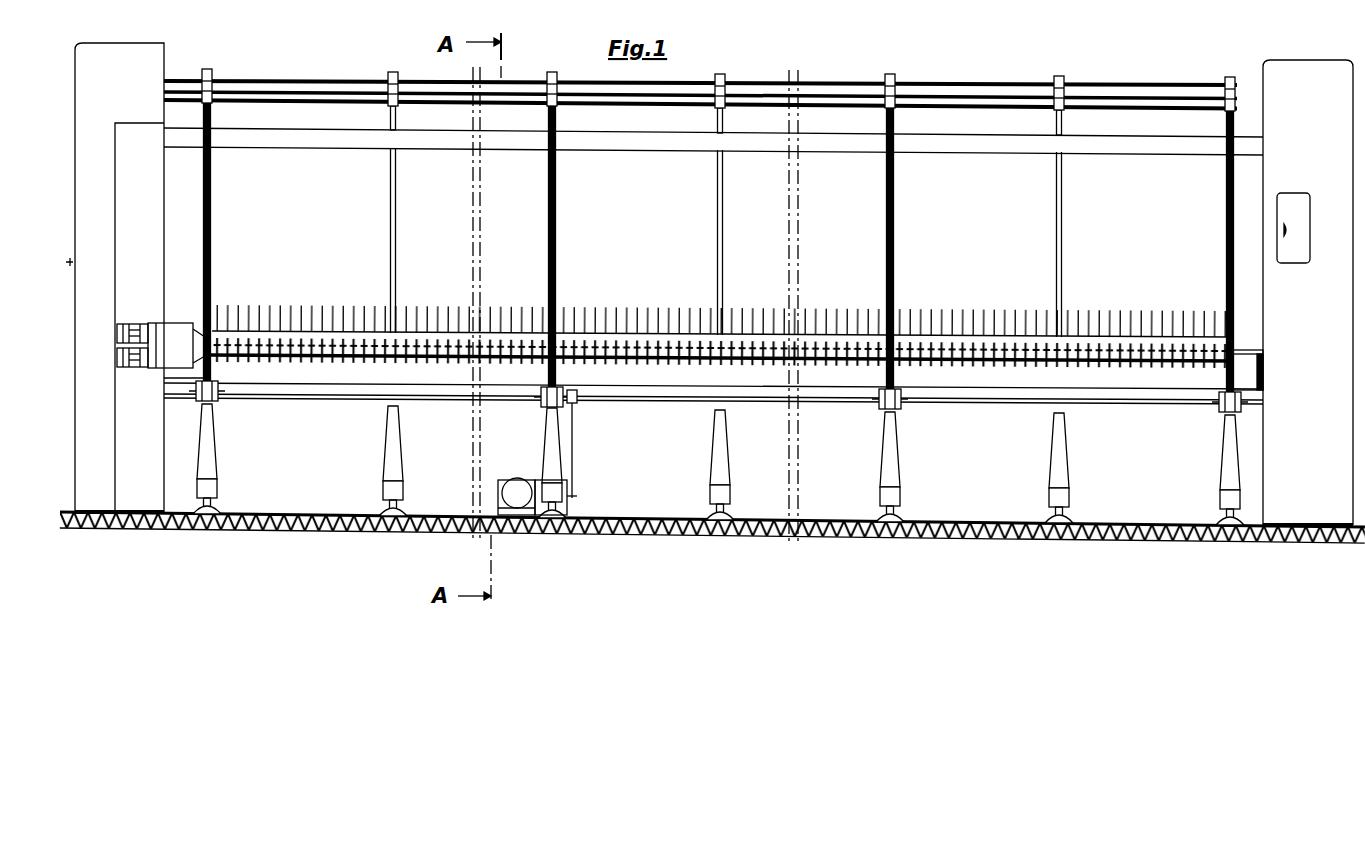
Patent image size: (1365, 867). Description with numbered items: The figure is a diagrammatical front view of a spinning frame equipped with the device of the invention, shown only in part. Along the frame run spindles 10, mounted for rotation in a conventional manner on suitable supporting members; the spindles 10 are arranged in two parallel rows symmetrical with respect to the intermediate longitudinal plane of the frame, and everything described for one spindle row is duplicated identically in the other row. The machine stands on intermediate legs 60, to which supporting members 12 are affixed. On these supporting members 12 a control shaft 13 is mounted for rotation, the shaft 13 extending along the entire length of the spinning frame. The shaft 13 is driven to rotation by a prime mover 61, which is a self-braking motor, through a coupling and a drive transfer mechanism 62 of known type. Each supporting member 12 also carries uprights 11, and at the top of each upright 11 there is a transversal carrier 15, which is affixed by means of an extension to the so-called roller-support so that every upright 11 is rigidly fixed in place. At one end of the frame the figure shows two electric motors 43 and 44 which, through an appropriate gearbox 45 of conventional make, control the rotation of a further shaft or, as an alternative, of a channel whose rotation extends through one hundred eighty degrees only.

The spindles 10 is at (292, 311).
The uprights 11 is at (214, 224).
The supporting members 12 is at (200, 404).
The control shaft 13 is at (332, 399).
The transversal carrier 15 is at (213, 70).
The electric motor 43 is at (133, 322).
The electric motor 44 is at (132, 369).
The gearbox 45 is at (172, 326).
The intermediate legs 60 is at (206, 442).
The prime mover 61 is at (514, 479).
The drive transfer mechanism 62 is at (573, 447).